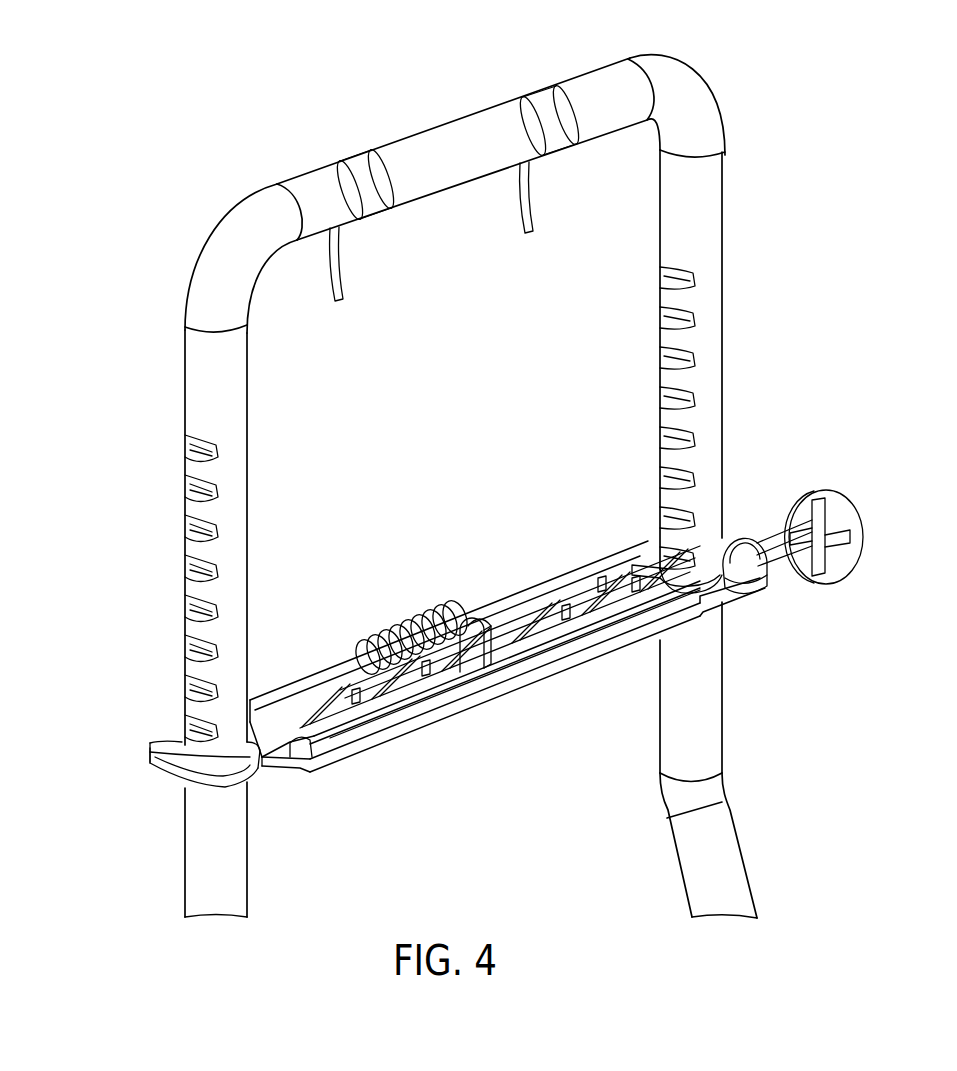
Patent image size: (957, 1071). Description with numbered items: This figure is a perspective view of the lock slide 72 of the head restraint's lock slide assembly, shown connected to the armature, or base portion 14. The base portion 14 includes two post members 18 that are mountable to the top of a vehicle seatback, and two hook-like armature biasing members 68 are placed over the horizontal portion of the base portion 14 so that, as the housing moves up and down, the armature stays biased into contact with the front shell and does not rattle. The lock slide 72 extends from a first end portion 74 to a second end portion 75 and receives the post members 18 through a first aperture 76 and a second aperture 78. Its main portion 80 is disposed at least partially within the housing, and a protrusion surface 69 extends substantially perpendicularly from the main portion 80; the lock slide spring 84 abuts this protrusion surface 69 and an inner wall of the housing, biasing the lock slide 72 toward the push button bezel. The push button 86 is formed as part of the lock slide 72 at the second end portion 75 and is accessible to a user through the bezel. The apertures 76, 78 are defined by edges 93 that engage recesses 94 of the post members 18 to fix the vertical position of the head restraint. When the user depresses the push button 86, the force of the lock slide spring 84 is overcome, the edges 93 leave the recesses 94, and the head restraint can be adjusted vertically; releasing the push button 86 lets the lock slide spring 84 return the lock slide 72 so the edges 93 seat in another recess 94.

The base portion 14 is at (278, 170).
The post members 18 is at (712, 757).
The armature biasing members 68 is at (341, 291).
The protrusion surface 69 is at (470, 616).
The lock slide 72 is at (460, 735).
The first end portion 74 is at (168, 777).
The second end portion 75 is at (772, 582).
The first aperture 76 is at (258, 775).
The second aperture 78 is at (765, 598).
The main portion 80 is at (542, 662).
The lock slide spring 84 is at (370, 640).
The push button 86 is at (845, 513).
The edges 93 is at (151, 762).
The recesses 94 is at (180, 529).